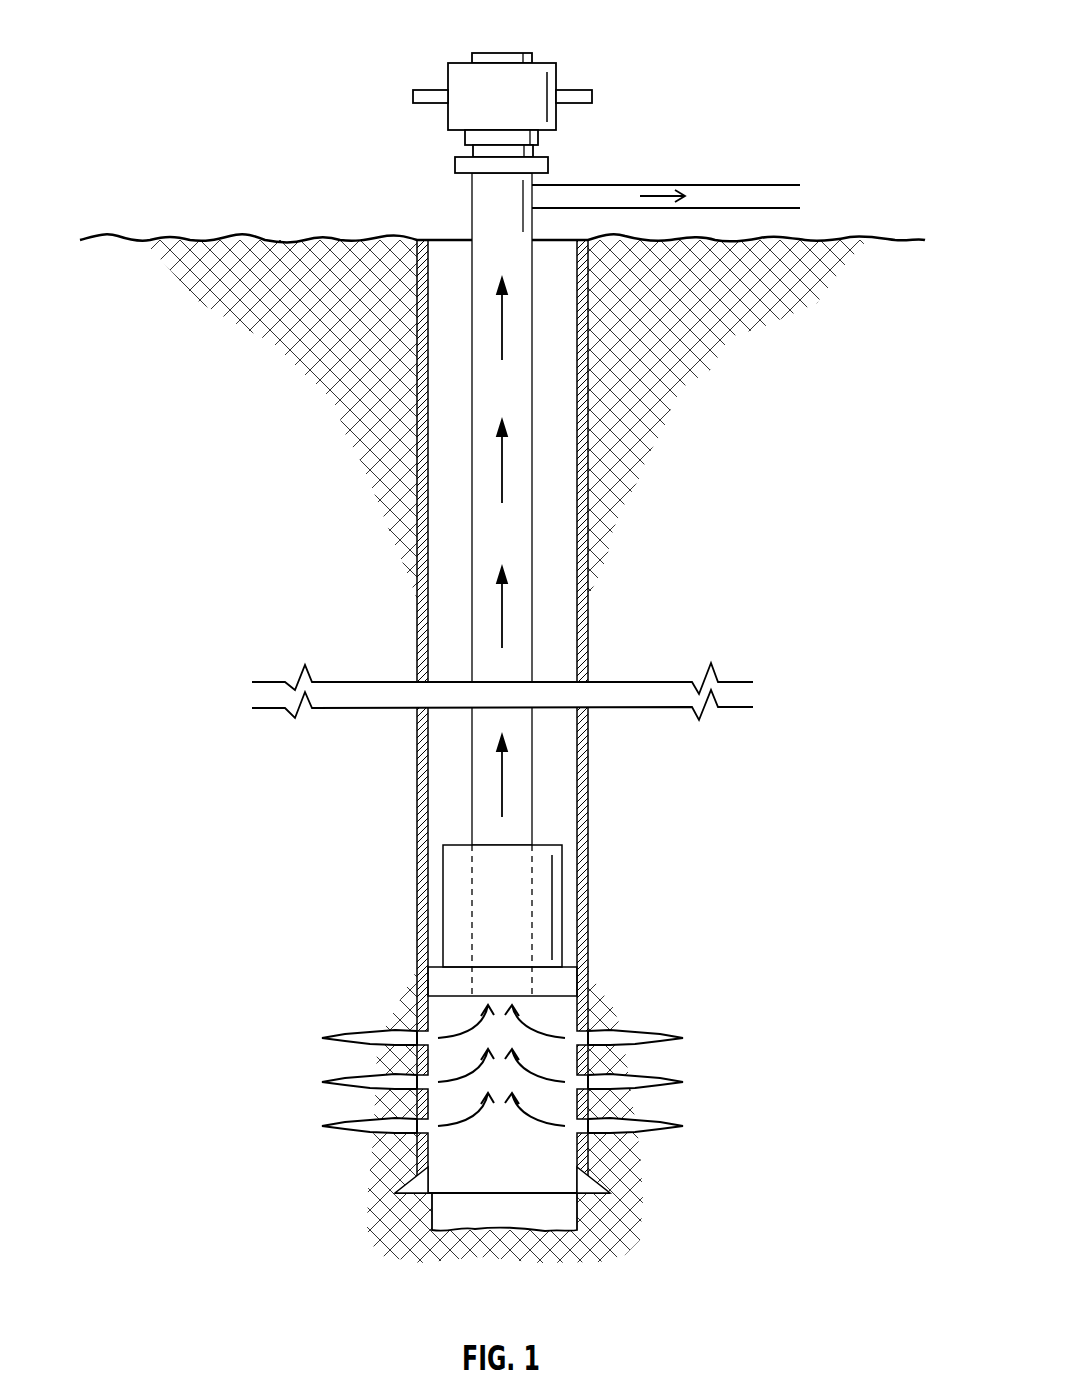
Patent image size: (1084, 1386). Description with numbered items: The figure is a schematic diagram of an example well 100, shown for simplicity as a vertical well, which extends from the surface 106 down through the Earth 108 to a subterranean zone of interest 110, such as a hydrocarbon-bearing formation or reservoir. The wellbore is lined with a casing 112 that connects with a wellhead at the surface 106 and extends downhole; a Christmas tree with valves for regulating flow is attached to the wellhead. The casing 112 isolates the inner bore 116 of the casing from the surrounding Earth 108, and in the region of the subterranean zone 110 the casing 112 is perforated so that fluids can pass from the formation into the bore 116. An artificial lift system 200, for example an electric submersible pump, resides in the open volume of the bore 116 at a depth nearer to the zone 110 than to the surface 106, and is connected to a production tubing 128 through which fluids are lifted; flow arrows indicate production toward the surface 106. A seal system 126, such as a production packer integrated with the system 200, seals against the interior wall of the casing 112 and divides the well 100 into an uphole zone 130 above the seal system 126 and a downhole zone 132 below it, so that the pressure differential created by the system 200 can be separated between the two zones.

The well 100 is at (734, 78).
The surface 106 is at (142, 240).
The Earth 108 is at (300, 419).
The subterranean zone of interest 110 is at (745, 993).
The casing 112 is at (588, 630).
The inner bore of the casing 116 is at (559, 567).
The seal system 126 is at (568, 980).
The production tubing 128 is at (472, 647).
The uphole zone 130 is at (559, 817).
The downhole zone 132 is at (448, 1011).
The artificial lift system 200 is at (453, 880).